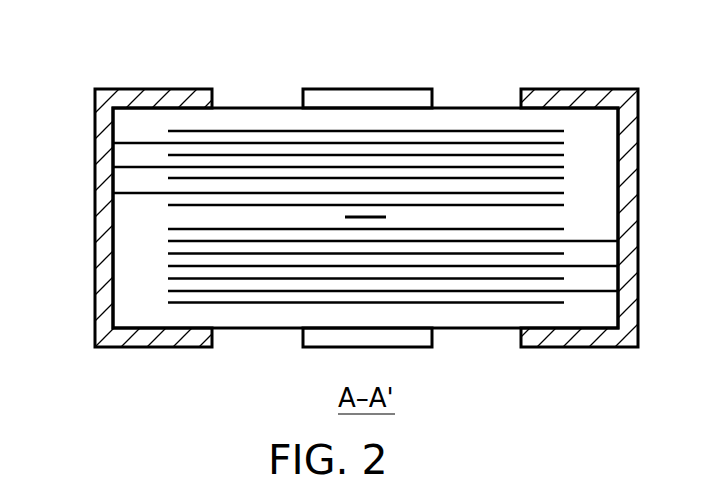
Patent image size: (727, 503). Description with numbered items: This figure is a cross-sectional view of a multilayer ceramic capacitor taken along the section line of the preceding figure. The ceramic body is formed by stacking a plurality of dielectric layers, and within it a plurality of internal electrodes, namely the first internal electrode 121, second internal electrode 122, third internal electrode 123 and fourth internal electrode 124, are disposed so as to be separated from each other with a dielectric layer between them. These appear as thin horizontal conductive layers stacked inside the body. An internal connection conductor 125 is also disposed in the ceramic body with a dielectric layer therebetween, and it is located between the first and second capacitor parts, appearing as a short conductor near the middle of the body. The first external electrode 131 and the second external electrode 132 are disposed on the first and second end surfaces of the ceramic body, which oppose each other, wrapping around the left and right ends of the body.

The first internal electrode 121 is at (135, 141).
The second internal electrode 122 is at (223, 131).
The third internal electrode 123 is at (168, 302).
The fourth internal electrode 124 is at (168, 291).
The internal connection conductor 125 is at (367, 215).
The first external electrode 131 is at (153, 99).
The second external electrode 132 is at (601, 98).